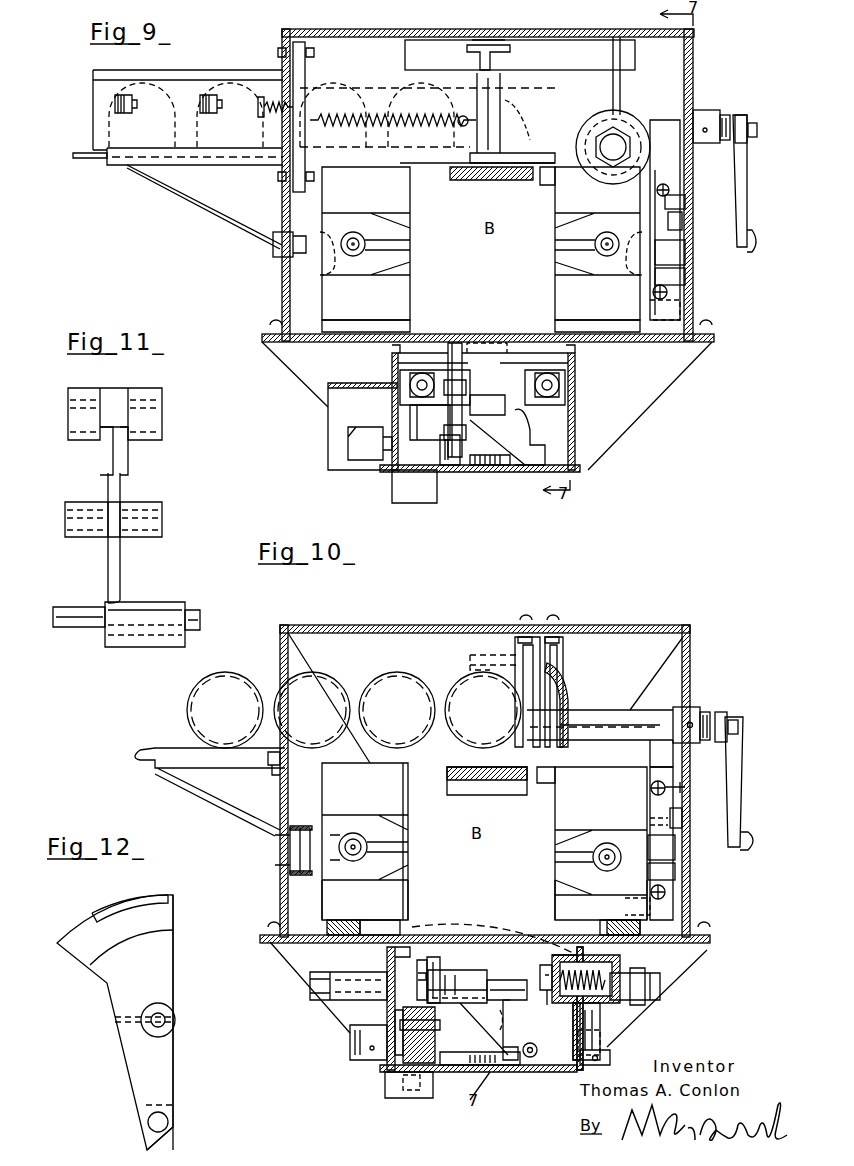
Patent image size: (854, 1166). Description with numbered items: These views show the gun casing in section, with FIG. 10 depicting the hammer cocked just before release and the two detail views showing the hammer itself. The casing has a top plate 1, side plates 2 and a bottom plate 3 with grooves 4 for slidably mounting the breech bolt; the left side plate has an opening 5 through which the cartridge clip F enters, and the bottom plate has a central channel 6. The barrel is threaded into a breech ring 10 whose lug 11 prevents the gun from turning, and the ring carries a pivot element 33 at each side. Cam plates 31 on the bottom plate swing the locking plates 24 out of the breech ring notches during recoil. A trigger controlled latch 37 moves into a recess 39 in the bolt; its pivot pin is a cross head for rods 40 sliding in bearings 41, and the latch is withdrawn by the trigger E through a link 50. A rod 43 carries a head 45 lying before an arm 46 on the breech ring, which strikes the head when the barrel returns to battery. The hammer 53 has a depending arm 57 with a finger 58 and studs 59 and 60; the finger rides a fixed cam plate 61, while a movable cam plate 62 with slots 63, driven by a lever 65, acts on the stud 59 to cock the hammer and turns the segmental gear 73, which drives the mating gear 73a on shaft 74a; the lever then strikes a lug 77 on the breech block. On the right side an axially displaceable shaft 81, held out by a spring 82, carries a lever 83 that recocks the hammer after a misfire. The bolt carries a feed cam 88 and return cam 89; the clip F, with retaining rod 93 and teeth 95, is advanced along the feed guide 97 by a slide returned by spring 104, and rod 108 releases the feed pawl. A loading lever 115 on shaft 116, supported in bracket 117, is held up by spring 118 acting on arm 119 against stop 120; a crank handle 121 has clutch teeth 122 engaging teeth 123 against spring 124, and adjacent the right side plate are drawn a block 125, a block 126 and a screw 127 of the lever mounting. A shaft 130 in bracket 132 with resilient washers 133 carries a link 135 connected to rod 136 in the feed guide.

In FIG. 9, the top plate 1 is at (362, 29).
In FIG. 10, the top plate 1 is at (490, 627).
In FIG. 9, the side plates 2 is at (690, 82).
In FIG. 10, the side plates 2 is at (280, 640).
In FIG. 9, the bottom plate 3 is at (330, 345).
In FIG. 10, the bottom plate 3 is at (485, 984).
In FIG. 9, the grooves 4 is at (390, 350).
In FIG. 10, the grooves 4 is at (385, 948).
In FIG. 10, the opening 5 is at (280, 673).
In FIG. 9, the channel 6 is at (578, 430).
In FIG. 9, the breech ring 10 is at (365, 243).
In FIG. 10, the breech ring 10 is at (365, 841).
In FIG. 9, the lug 11 is at (300, 256).
In FIG. 10, the lug 11 is at (290, 853).
In FIG. 10, the locking plates 24 is at (382, 920).
In FIG. 9, the cam plates 31 is at (335, 327).
In FIG. 10, the cam plates 31 is at (327, 927).
In FIG. 9, the pivot shaft 33 is at (353, 238).
In FIG. 10, the pivot shaft 33 is at (353, 839).
In FIG. 9, the trigger controlled latch 37 is at (452, 345).
In FIG. 9, the recess 39 is at (500, 343).
In FIG. 10, the recess 39 is at (530, 928).
In FIG. 9, the rods 40 is at (410, 383).
In FIG. 9, the bearings 41 is at (405, 392).
In FIG. 10, the rod 43 is at (527, 1058).
In FIG. 10, the head 45 is at (538, 1048).
In FIG. 9, the arm 46 is at (507, 437).
In FIG. 10, the arm 46 is at (489, 1030).
In FIG. 9, the link 50 is at (466, 414).
In FIG. 11, the hammer 53 is at (110, 418).
In FIG. 12, the hammer 53 is at (116, 1022).
In FIG. 11, the depending arm 57 is at (113, 574).
In FIG. 12, the depending arm 57 is at (153, 1064).
In FIG. 11, the finger 58 is at (158, 635).
In FIG. 12, the finger 58 is at (160, 1143).
In FIG. 10, the finger 58 is at (462, 975).
In FIG. 11, the stud 59 is at (195, 612).
In FIG. 12, the stud 59 is at (165, 1120).
In FIG. 10, the stud 59 is at (421, 960).
In FIG. 11, the stud 60 is at (90, 620).
In FIG. 10, the stud 60 is at (512, 1000).
In FIG. 10, the fixed cam plate 61 is at (420, 1027).
In FIG. 9, the movable cam plate 62 is at (415, 417).
In FIG. 10, the movable cam plate 62 is at (415, 1045).
In FIG. 9, the slots 63 is at (430, 440).
In FIG. 10, the slots 63 is at (409, 1085).
In FIG. 10, the lever 65 is at (395, 1000).
In FIG. 9, the segmental gear 73 is at (455, 465).
In FIG. 10, the segmental gear 73 is at (355, 1054).
In FIG. 9, the mating segmental gear 73a is at (510, 465).
In FIG. 10, the mating segmental gear 73a is at (610, 1055).
In FIG. 10, the shaft 74a is at (600, 1018).
In FIG. 10, the lug 77 is at (440, 962).
In FIG. 10, the axially displaceable shaft 81 is at (660, 992).
In FIG. 10, the spring 82 is at (600, 968).
In FIG. 10, the lever 83 is at (544, 990).
In FIG. 9, the feed cam 88 is at (552, 182).
In FIG. 10, the feed cam 88 is at (550, 785).
In FIG. 9, the return cam 89 is at (490, 180).
In FIG. 10, the return cam 89 is at (485, 783).
In FIG. 9, the rod 93 is at (80, 158).
In FIG. 9, the angular teeth 95 is at (115, 104).
In FIG. 9, the feed guide 97 is at (520, 55).
In FIG. 9, the spring 104 is at (420, 128).
In FIG. 9, the rod 108 is at (262, 115).
In FIG. 10, the loading lever 115 is at (570, 690).
In FIG. 9, the shaft 116 is at (757, 134).
In FIG. 10, the shaft 116 is at (738, 733).
In FIG. 10, the bracket 117 is at (560, 658).
In FIG. 9, the spring 118 is at (657, 194).
In FIG. 10, the spring 118 is at (651, 793).
In FIG. 9, the depending arm 119 is at (685, 201).
In FIG. 10, the depending arm 119 is at (665, 762).
In FIG. 9, the stop 120 is at (682, 221).
In FIG. 10, the stop 120 is at (682, 815).
In FIG. 9, the crank handle 121 is at (752, 186).
In FIG. 10, the crank handle 121 is at (742, 782).
In FIG. 9, the clutch teeth 122 is at (746, 126).
In FIG. 10, the clutch teeth 122 is at (728, 722).
In FIG. 9, the clutch teeth 123 is at (708, 110).
In FIG. 10, the clutch teeth 123 is at (703, 712).
In FIG. 9, the spring 124 is at (728, 115).
In FIG. 10, the spring 124 is at (715, 713).
In FIG. 9, the block 125 is at (670, 278).
In FIG. 10, the block 125 is at (660, 878).
In FIG. 9, the block 126 is at (685, 254).
In FIG. 10, the block 126 is at (675, 857).
In FIG. 9, the screw 127 is at (667, 292).
In FIG. 10, the screw 127 is at (668, 896).
In FIG. 9, the shaft 130 is at (612, 155).
In FIG. 9, the bracket 132 is at (613, 92).
In FIG. 9, the resilient washers 133 is at (626, 119).
In FIG. 9, the link 135 is at (495, 106).
In FIG. 9, the rod 136 is at (485, 44).
In FIG. 9, the clip F is at (252, 79).
In FIG. 9, the trigger E is at (370, 443).